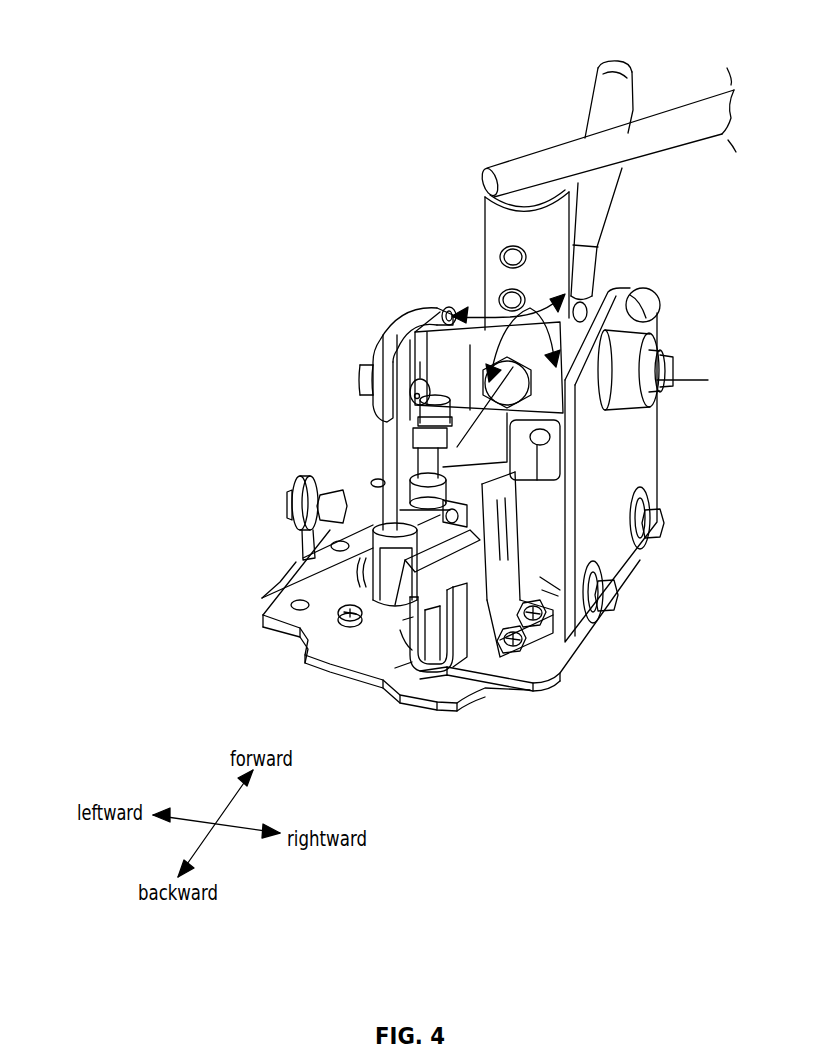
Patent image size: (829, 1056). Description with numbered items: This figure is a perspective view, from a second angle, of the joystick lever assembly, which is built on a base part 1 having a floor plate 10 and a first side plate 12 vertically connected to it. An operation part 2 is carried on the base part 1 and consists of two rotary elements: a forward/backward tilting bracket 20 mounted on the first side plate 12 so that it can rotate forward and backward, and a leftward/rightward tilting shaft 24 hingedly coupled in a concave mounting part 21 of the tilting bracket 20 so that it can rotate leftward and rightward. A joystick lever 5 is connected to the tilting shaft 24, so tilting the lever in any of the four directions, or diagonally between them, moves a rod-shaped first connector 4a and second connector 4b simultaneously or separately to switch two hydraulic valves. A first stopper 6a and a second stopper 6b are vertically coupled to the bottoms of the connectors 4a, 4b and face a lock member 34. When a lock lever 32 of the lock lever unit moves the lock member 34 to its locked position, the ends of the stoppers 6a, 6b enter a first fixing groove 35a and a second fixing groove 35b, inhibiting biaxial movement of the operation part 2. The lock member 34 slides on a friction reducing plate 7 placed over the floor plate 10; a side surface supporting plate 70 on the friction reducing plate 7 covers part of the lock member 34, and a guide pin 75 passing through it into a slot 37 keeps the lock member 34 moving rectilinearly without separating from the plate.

The base part 1 is at (560, 744).
The operation part 2 is at (448, 252).
The first connector 4a is at (383, 465).
The second connector 4b is at (425, 462).
The joystick lever 5 is at (688, 116).
The first stopper 6a is at (405, 640).
The second stopper 6b is at (450, 518).
The friction reducing plate 7 is at (472, 667).
The floor plate 10 is at (460, 694).
The first side plate 12 is at (618, 565).
The forward/backward tilting bracket 20 is at (400, 343).
The concave mounting part 21 is at (582, 307).
The leftward/rightward tilting shaft 24 is at (447, 318).
The lock lever 32 is at (612, 206).
The lock member 34 is at (413, 665).
The first fixing groove 35a is at (413, 623).
The second fixing groove 35b is at (357, 573).
The slot 37 is at (433, 625).
The side surface supporting plate 70 is at (408, 648).
The guide pin 75 is at (440, 623).